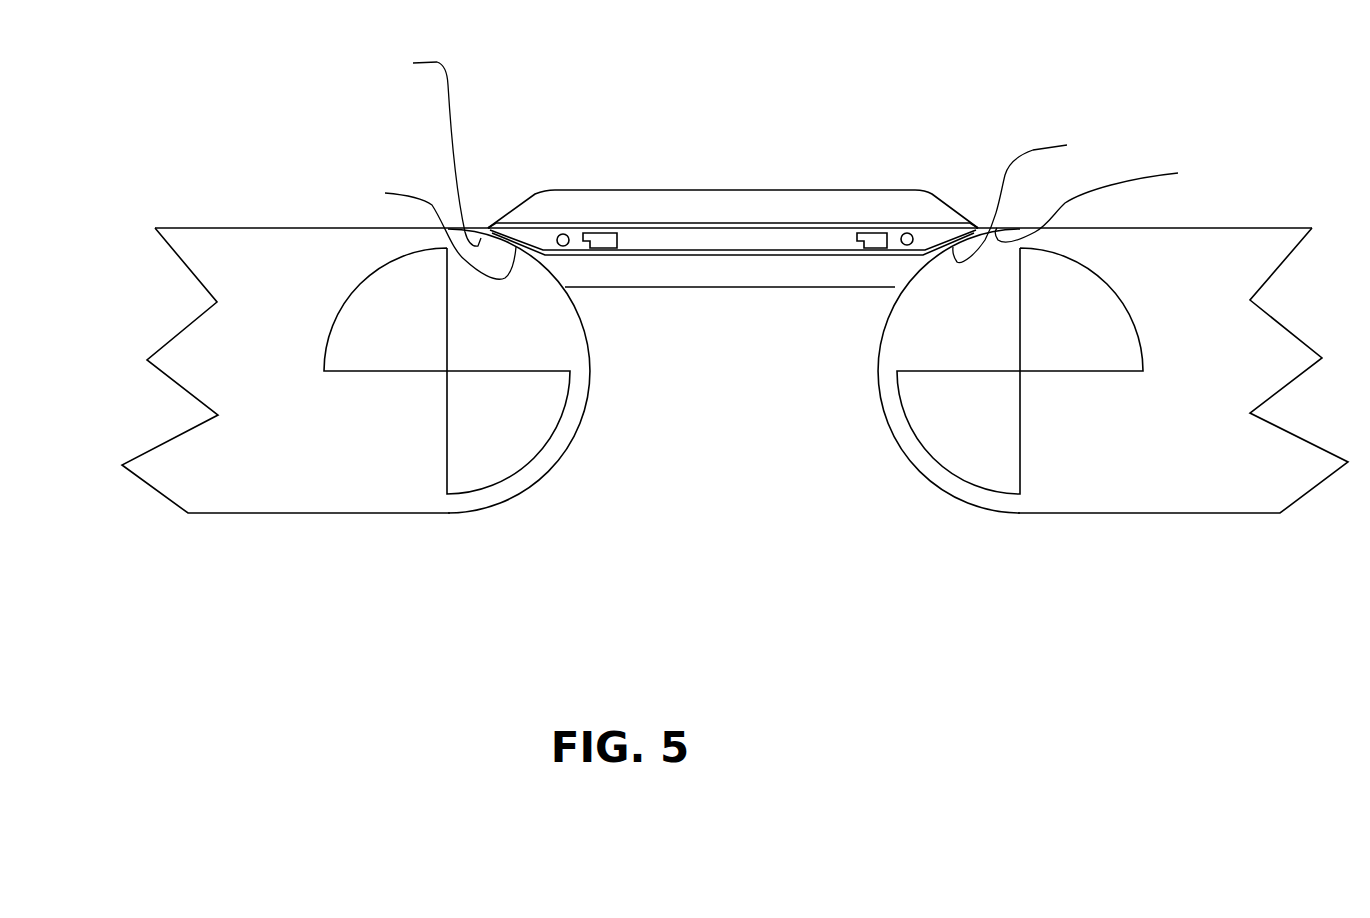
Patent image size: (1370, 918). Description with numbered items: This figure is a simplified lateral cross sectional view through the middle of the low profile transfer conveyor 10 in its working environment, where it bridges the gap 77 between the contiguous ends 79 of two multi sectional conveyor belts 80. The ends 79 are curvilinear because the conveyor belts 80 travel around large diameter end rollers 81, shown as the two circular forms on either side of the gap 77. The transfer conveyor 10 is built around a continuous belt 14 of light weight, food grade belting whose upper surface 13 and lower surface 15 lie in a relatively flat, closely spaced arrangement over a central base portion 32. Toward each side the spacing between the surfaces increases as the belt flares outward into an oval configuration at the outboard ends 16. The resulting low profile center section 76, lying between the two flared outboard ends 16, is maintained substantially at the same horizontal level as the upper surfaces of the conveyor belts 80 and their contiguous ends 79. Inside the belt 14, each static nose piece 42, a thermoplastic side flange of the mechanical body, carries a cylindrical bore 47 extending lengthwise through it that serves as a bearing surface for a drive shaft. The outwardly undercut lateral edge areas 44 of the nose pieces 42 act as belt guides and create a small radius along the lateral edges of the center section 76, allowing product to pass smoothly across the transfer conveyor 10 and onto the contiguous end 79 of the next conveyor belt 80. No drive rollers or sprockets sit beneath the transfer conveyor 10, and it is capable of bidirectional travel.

The transfer conveyor 10 is at (760, 298).
The upper surface 13 is at (655, 223).
The belt 14 is at (727, 223).
The lower surface 15 is at (775, 238).
The outboard ends 16 is at (583, 210).
The central base portion 32 is at (825, 252).
The nose piece 42 is at (577, 240).
The lower outer peripheral edge 44 is at (724, 206).
The cylindrical bore 47 is at (558, 234).
The low profile center section 76 is at (690, 222).
The gap 77 is at (745, 477).
The contiguous ends 79 is at (792, 149).
The conveyor belts 80 is at (478, 500).
The end rollers 81 is at (520, 428).